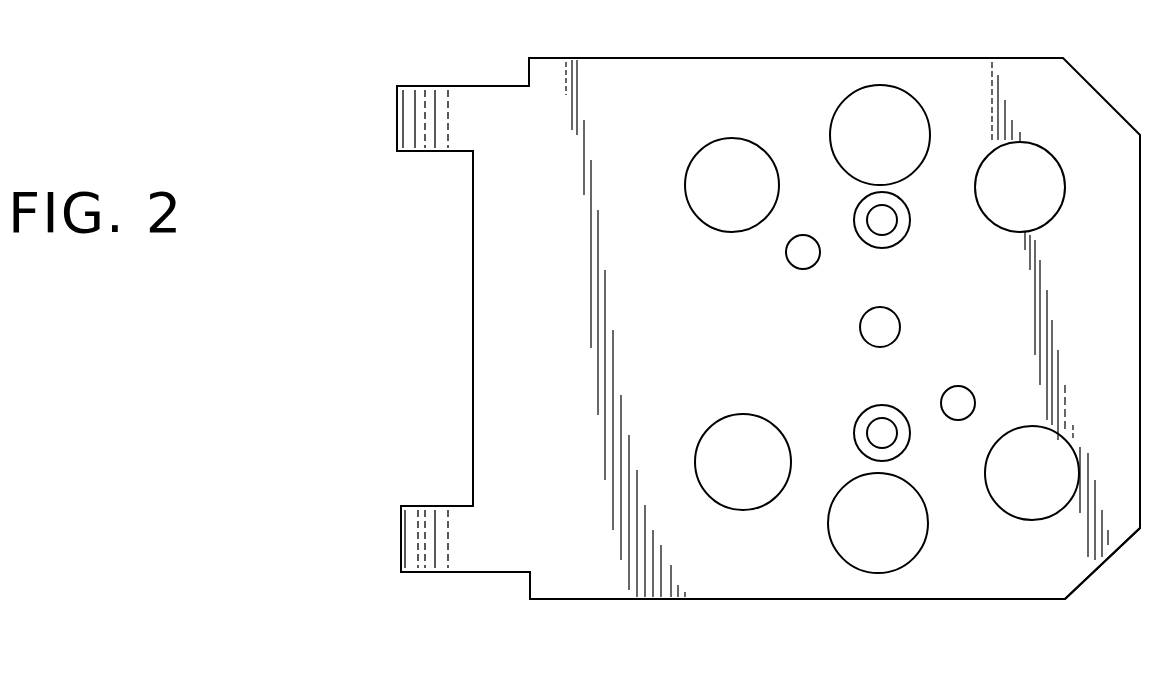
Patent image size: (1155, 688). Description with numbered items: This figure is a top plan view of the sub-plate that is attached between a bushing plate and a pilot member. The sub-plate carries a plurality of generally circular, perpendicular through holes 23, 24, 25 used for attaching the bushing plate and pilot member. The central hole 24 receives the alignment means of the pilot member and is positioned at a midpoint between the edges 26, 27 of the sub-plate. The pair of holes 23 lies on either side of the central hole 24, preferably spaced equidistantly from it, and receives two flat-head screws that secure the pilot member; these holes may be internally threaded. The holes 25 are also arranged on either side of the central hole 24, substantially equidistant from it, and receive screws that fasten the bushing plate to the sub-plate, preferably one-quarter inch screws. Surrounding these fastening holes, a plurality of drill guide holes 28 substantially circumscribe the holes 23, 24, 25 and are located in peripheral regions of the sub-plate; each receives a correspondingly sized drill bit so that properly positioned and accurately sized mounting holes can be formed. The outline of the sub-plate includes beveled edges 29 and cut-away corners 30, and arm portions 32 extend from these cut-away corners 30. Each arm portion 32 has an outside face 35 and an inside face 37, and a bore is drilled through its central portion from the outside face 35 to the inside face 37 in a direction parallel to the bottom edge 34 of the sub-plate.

The holes 23 is at (911, 219).
The central hole 24 is at (900, 330).
The holes 25 is at (800, 236).
The edge 26 is at (566, 58).
The edge 27 is at (665, 599).
The drill guide holes 28 is at (715, 140).
The beveled edges 29 is at (1083, 598).
The cut-away corners 30 is at (495, 85).
The arm portions 32 is at (433, 84).
The bottom edge 34 is at (473, 275).
The outside face 35 is at (403, 572).
The inside face 37 is at (408, 506).